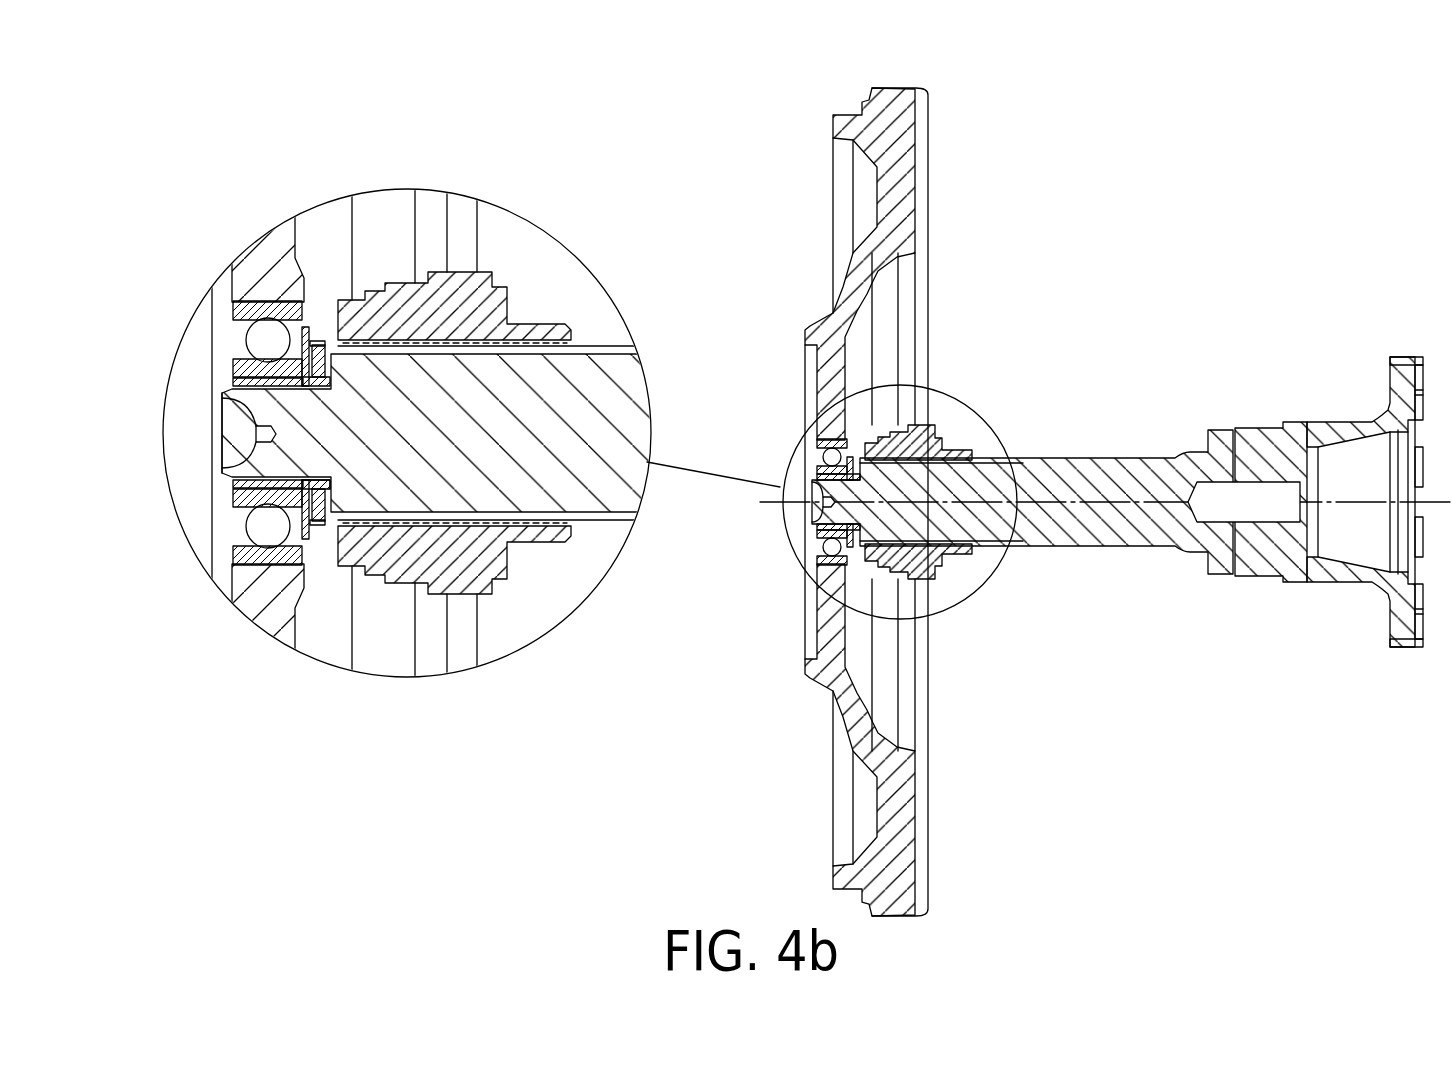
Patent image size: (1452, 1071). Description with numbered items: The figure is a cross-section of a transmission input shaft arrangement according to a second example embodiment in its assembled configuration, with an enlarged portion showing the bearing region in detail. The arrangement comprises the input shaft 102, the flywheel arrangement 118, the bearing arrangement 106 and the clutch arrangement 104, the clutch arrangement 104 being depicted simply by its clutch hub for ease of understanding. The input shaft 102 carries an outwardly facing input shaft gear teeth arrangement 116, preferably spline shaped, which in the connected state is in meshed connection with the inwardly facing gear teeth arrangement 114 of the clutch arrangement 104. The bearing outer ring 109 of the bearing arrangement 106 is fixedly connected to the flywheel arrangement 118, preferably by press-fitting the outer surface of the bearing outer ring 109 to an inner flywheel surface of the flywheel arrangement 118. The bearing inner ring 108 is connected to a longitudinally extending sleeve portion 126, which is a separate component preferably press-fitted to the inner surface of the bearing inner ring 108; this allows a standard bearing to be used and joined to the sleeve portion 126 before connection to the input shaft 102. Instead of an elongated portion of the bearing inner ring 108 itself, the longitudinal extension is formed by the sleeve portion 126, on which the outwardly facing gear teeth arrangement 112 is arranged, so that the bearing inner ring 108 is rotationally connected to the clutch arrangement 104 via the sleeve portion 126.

The input shaft 102 is at (577, 408).
The clutch arrangement 104 is at (468, 291).
The bearing arrangement 106 is at (464, 431).
The bearing inner ring 108 is at (252, 397).
The bearing outer ring 109 is at (233, 296).
The outwardly facing gear teeth arrangement 112 is at (316, 335).
The inwardly facing gear teeth arrangement 114 is at (327, 520).
The outwardly facing input shaft gear teeth arrangement 116 is at (600, 348).
The flywheel arrangement 118 is at (267, 605).
The longitudinally extending sleeve portion 126 is at (230, 382).